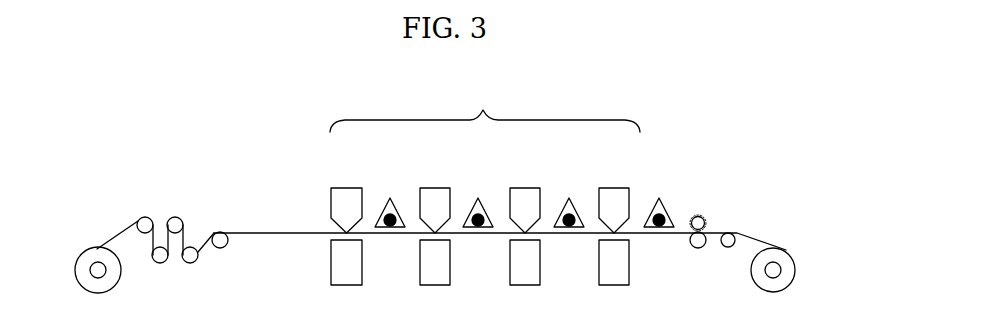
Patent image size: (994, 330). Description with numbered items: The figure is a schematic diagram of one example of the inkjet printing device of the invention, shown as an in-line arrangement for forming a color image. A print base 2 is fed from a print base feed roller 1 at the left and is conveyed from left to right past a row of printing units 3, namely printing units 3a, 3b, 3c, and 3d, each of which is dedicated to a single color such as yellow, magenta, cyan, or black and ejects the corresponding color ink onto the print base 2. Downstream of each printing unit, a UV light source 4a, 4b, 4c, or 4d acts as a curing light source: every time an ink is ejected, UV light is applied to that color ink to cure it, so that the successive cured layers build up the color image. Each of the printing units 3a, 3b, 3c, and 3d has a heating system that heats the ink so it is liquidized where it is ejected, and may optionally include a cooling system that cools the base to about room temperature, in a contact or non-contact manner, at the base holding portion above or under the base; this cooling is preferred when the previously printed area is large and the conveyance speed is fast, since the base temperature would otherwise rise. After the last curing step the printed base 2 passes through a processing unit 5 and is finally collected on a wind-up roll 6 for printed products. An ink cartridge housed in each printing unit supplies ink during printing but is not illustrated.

The print base feed roller 1 is at (105, 272).
The print base 2 is at (252, 232).
The printing units 3 is at (490, 105).
The printing unit 3a is at (344, 195).
The printing unit 3b is at (433, 195).
The printing unit 3c is at (523, 195).
The printing unit 3d is at (605, 195).
The UV light source 4a is at (391, 200).
The UV light source 4b is at (479, 200).
The UV light source 4c is at (570, 200).
The UV light source 4d is at (660, 200).
The processing unit 5 is at (708, 215).
The wind-up roll 6 is at (767, 272).